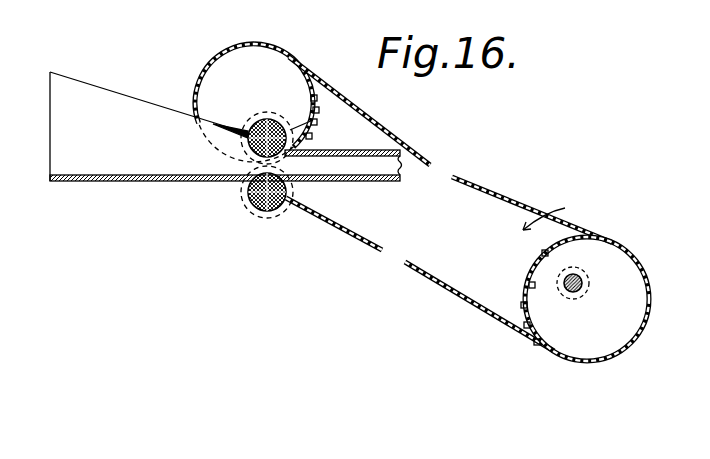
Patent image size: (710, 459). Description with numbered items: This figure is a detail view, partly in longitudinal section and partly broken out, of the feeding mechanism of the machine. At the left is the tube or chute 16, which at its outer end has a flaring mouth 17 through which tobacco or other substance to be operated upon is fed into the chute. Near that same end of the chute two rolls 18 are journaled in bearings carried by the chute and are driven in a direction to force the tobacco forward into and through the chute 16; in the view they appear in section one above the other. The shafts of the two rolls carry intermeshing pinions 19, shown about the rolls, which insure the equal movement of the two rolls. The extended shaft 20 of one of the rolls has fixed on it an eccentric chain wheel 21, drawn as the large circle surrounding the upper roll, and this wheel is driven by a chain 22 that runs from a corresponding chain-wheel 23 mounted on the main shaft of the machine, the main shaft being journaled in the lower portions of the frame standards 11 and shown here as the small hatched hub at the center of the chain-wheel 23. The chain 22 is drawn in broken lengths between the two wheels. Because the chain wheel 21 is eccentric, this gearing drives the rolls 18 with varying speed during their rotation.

The standards 11 is at (565, 278).
The tube or chute 16 is at (353, 150).
The flaring mouth 17 is at (226, 126).
The rolls 18 is at (251, 200).
The intermeshing pinions 19 is at (275, 117).
The extended shaft 20 is at (248, 131).
The eccentric chain wheel 21 is at (224, 79).
The chain 22 is at (370, 237).
The chain-wheel 23 is at (570, 262).